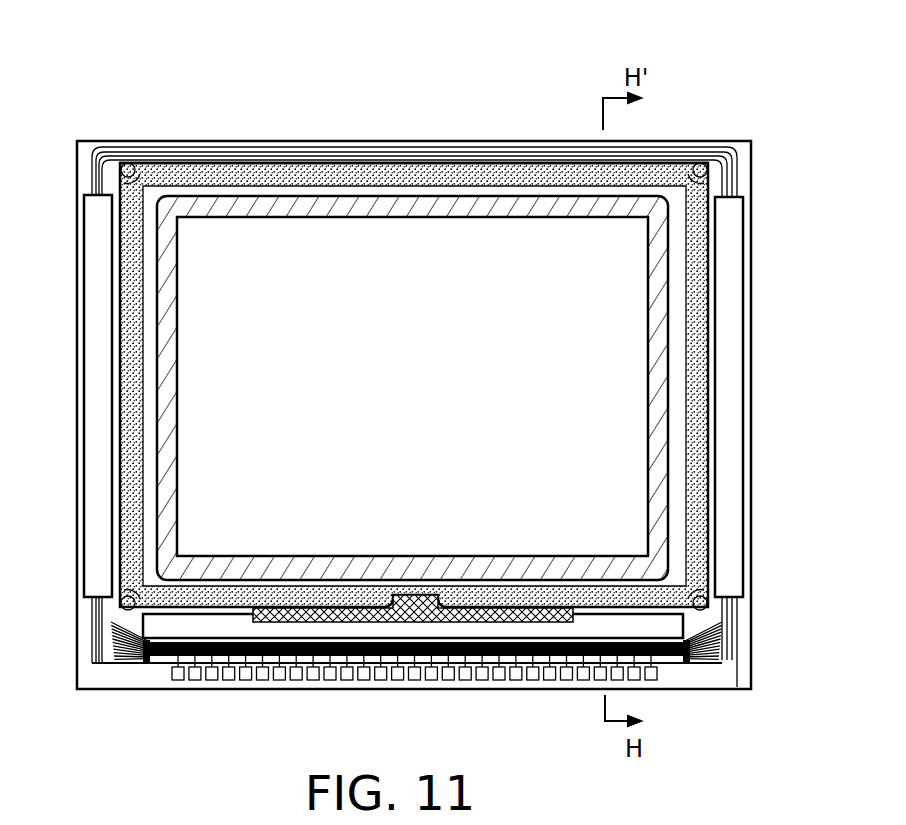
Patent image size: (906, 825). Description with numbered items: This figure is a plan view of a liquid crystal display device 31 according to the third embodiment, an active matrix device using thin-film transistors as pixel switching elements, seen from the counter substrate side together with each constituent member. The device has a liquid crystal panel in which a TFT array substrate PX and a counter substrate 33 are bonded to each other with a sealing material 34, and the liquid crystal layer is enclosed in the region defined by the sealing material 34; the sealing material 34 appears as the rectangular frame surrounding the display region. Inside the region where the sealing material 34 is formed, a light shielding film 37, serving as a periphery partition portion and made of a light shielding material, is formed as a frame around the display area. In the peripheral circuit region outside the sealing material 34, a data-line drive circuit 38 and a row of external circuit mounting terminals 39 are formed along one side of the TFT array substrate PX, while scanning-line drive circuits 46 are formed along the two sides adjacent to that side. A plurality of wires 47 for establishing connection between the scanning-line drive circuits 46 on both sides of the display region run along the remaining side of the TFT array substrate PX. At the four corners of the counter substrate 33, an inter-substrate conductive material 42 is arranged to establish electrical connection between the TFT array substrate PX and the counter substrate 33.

The liquid crystal display device 31 is at (386, 94).
The counter substrate 33 is at (313, 165).
The sealing material 34 is at (698, 320).
The light shielding film 37 is at (660, 268).
The data-line drive circuit 38 is at (160, 636).
The external circuit mounting terminals 39 is at (470, 668).
The inter-substrate conductive material 42 is at (124, 163).
The scanning-line drive circuits 46 is at (96, 418).
The wires 47 is at (456, 150).
The TFT array substrate PX is at (243, 141).